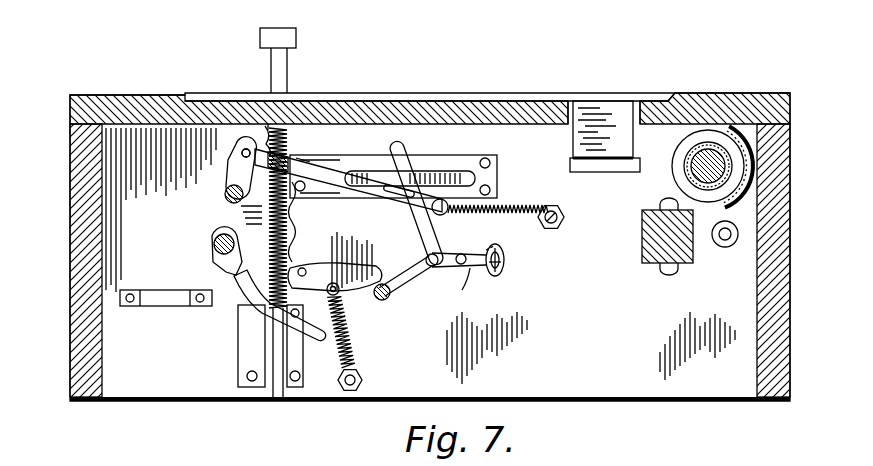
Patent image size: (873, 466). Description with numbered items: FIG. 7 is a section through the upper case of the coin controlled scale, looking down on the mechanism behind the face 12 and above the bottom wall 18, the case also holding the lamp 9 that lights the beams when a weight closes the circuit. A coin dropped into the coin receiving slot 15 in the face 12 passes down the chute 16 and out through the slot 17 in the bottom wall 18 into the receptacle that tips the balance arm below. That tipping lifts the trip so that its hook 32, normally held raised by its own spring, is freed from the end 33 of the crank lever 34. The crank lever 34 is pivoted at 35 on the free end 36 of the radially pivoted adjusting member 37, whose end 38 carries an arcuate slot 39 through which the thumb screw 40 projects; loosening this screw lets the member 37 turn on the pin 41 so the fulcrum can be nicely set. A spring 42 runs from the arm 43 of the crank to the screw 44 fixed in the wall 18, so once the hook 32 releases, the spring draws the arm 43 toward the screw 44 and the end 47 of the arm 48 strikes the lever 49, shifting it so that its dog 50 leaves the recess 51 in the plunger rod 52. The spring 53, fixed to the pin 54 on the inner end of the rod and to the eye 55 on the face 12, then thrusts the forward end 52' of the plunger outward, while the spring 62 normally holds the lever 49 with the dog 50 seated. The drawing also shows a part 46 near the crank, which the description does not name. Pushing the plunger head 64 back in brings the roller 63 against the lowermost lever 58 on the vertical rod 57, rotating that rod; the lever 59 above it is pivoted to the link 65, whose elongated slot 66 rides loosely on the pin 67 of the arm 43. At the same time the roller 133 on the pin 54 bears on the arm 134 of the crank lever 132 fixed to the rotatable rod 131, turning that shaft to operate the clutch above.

The lamp 9 is at (712, 192).
The face 12 is at (187, 100).
The coin receiving slot 15 is at (612, 100).
The chute 16 is at (603, 129).
The slot 17 is at (618, 172).
The bottom wall 18 is at (671, 289).
The hook 32 is at (432, 162).
The end of crank lever 33 is at (405, 165).
The crank lever 34 is at (458, 245).
The pivot 35 is at (440, 268).
The free end of adjusting member 36 is at (480, 302).
The adjusting member 37 is at (478, 268).
The end of adjusting member 38 is at (505, 258).
The arcuate slot 39 is at (504, 264).
The thumb screw 40 is at (504, 268).
The pin 41 is at (492, 254).
The spring 42 is at (530, 202).
The arm of crank 43 is at (434, 212).
The screw 44 is at (560, 204).
The pin 46 is at (374, 165).
The end of arm 47 is at (378, 301).
The arm of crank 48 is at (398, 276).
The lever 49 is at (324, 270).
The dog 50 is at (298, 232).
The recess 51 is at (236, 268).
The plunger rod 52 is at (281, 277).
The forward end of plunger 52' is at (301, 63).
The spring 53 is at (246, 206).
The pin 54 is at (292, 325).
The eye 55 is at (286, 152).
The vertical rod 57 is at (246, 148).
The lever 58 is at (268, 145).
The lever 59 is at (262, 148).
The spring 62 is at (334, 394).
The roller 63 is at (300, 148).
The plunger head 64 is at (276, 30).
The link 65 is at (350, 172).
The elongated slot 66 is at (475, 172).
The pin 67 is at (440, 160).
The rotatable rod 131 is at (213, 244).
The crank lever 132 is at (232, 286).
The roller 133 is at (349, 292).
The arm 134 is at (262, 322).